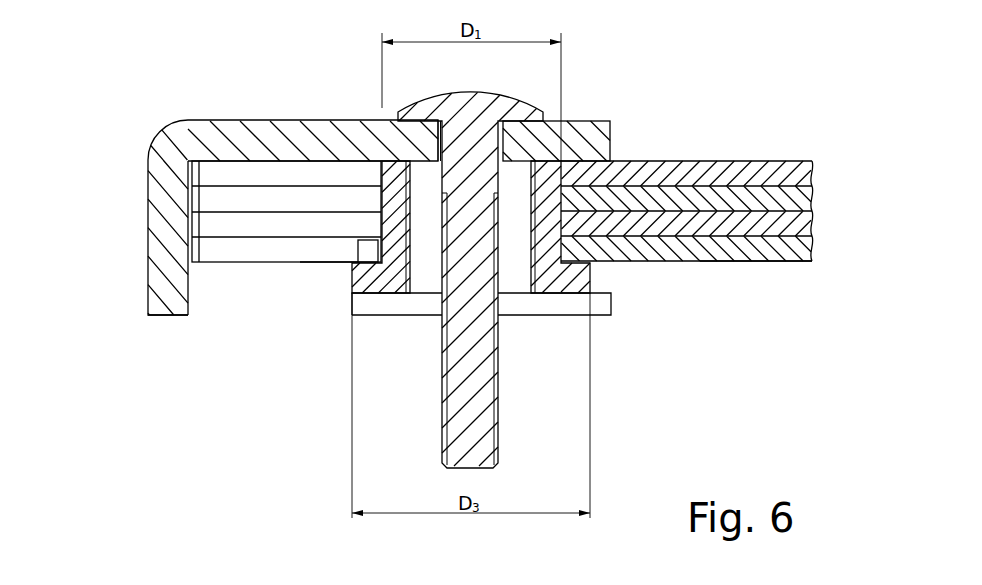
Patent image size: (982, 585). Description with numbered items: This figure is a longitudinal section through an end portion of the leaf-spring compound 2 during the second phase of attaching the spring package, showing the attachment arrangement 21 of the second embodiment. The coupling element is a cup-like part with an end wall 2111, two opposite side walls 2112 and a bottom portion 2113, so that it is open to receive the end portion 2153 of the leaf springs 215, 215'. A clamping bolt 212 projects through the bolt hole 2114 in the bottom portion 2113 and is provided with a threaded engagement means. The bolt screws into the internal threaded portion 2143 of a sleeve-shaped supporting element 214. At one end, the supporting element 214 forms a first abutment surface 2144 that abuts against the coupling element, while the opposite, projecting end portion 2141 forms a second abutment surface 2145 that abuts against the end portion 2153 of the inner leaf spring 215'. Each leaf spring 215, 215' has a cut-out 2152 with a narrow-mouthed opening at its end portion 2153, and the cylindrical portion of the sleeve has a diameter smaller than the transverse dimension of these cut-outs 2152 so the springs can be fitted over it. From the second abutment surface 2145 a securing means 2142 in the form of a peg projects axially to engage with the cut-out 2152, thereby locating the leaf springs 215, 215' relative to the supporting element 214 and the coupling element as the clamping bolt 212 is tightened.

The leaf-spring compound 2 is at (696, 396).
The attachment arrangement 21 is at (218, 376).
The end wall 2111 is at (148, 255).
The side wall 2112 is at (224, 316).
The bottom portion 2113 is at (278, 120).
The bolt hole 2114 is at (427, 135).
The clamping bolt 212 is at (497, 97).
The supporting element 214 is at (610, 307).
The projecting end portion 2141 is at (349, 294).
The securing means 2142 is at (356, 252).
The threaded portion 2143 is at (430, 294).
The first abutment surface 2144 is at (582, 122).
The second abutment surface 2145 is at (593, 248).
The leaf spring 215 is at (700, 178).
The inner leaf spring 215' is at (772, 301).
The cut-out 2152 is at (200, 200).
The end portion 2153 is at (350, 264).